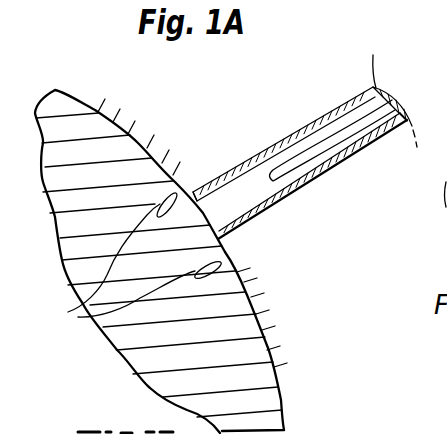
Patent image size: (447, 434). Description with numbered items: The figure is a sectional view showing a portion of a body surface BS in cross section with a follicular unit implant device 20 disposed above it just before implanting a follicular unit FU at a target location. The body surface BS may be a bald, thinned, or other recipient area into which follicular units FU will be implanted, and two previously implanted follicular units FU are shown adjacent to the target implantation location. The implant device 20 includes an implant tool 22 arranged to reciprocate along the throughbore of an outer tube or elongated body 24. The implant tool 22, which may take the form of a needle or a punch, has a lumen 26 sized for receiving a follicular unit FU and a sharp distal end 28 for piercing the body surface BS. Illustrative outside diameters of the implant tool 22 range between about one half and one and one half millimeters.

The implant device 20 is at (318, 97).
The implant tool 22 is at (291, 138).
The elongated body 24 is at (228, 253).
The lumen 26 is at (321, 150).
The sharp distal end 28 is at (262, 197).
The follicular unit FU is at (78, 317).
The body surface BS is at (281, 392).